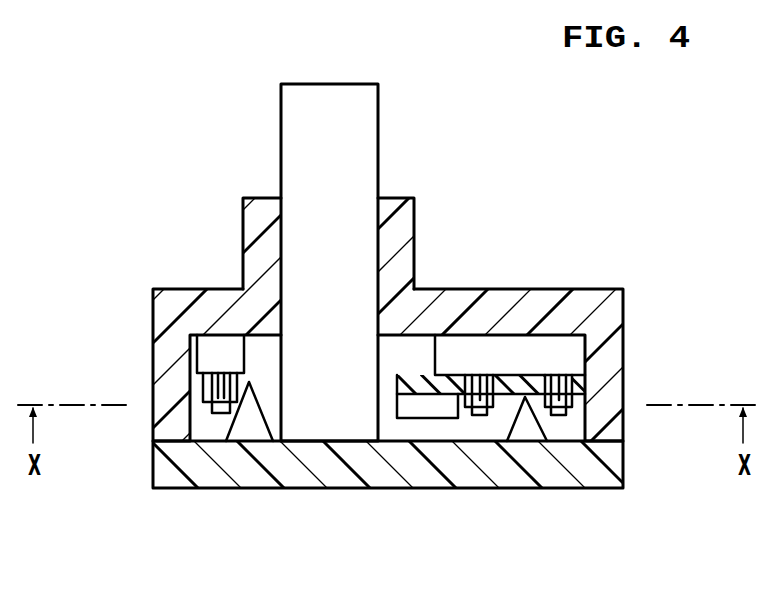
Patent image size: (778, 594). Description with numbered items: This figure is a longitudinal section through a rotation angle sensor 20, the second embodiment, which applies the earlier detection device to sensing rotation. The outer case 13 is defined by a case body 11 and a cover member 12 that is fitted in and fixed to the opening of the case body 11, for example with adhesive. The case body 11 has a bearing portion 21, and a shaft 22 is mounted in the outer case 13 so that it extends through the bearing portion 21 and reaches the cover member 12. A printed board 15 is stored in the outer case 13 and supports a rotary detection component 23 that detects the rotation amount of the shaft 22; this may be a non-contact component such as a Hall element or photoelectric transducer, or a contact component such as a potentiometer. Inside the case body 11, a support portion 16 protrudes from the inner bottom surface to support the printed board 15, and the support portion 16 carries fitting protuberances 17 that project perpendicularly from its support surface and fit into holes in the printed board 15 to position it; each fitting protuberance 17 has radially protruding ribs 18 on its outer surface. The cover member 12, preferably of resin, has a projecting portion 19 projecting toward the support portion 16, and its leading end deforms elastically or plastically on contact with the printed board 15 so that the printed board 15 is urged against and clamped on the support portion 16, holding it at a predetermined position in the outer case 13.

The case body 11 is at (580, 303).
The cover member 12 is at (613, 461).
The outer case 13 is at (135, 487).
The printed board 15 is at (460, 377).
The support portion 16 is at (555, 353).
The fitting protuberance 17 is at (468, 417).
The rib 18 is at (492, 415).
The projecting portion 19 is at (525, 425).
The rotation angle sensor 20 is at (177, 133).
The bearing portion 21 is at (400, 232).
The shaft 22 is at (353, 122).
The rotary detection component 23 is at (424, 403).